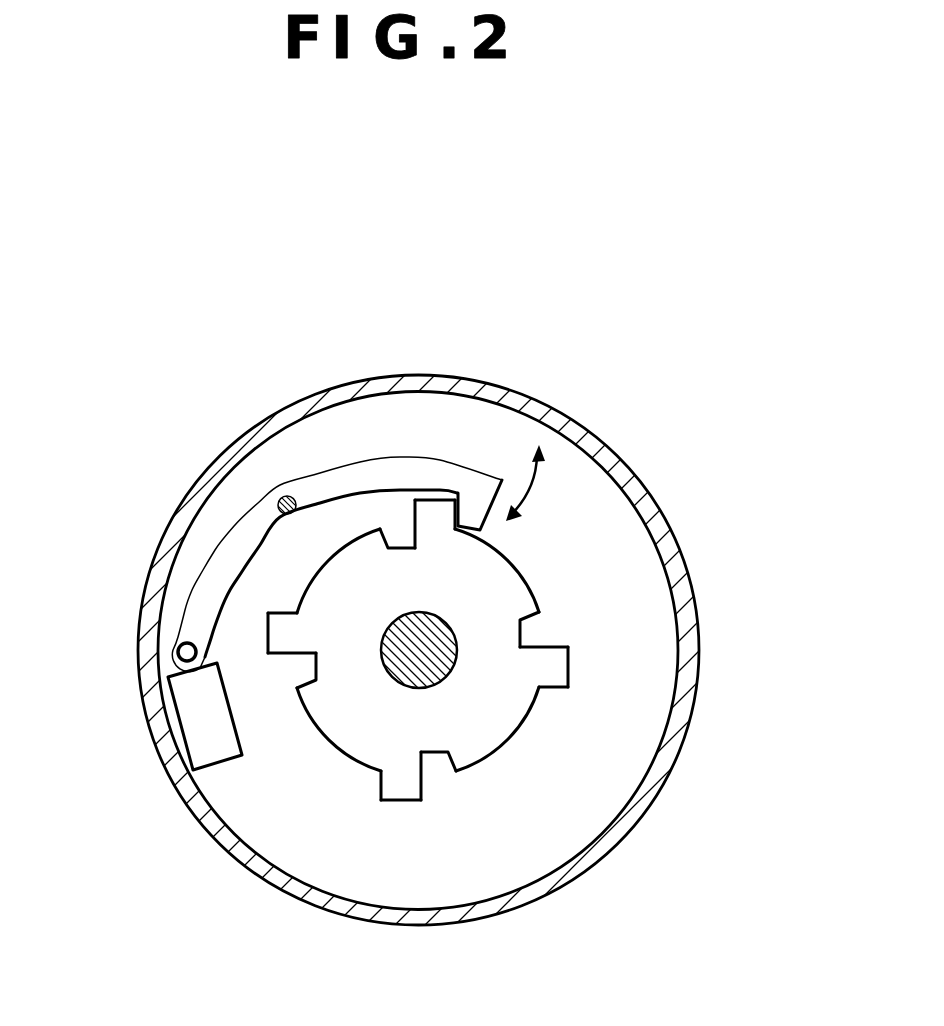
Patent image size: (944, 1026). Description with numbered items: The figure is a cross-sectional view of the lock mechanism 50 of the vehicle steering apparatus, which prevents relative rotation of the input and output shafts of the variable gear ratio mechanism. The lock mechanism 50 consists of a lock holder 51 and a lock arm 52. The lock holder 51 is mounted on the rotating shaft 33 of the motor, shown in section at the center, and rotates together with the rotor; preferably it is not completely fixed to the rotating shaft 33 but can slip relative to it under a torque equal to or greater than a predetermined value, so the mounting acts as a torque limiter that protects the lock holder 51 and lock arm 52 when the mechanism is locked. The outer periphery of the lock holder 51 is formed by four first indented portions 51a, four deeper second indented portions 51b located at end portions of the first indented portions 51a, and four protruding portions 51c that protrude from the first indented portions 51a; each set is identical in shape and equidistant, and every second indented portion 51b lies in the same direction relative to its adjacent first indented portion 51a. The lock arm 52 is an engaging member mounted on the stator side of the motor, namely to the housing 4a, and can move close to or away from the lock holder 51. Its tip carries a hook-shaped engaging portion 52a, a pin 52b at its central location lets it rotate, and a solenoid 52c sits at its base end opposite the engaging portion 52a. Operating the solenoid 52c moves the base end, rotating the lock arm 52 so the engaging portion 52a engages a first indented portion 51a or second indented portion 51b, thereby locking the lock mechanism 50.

The lock mechanism 50 is at (650, 369).
The housing 4a is at (207, 468).
The rotating shaft 33 is at (457, 670).
The lock holder 51 is at (333, 702).
The first indented portion 51a is at (307, 577).
The second indented portion 51b is at (397, 547).
The protruding portion 51c is at (575, 667).
The lock arm 52 is at (400, 467).
The engaging portion 52a is at (480, 530).
The pin 52b is at (288, 497).
The solenoid 52c is at (198, 723).